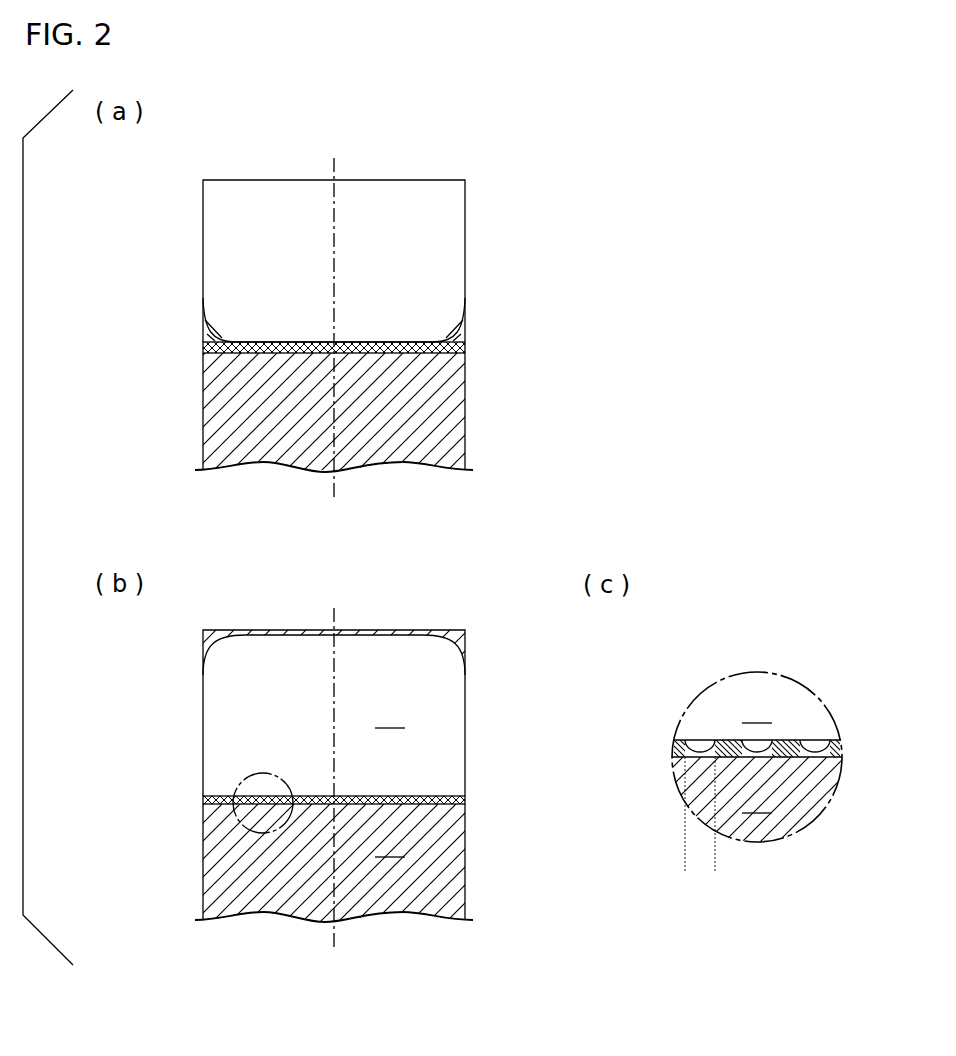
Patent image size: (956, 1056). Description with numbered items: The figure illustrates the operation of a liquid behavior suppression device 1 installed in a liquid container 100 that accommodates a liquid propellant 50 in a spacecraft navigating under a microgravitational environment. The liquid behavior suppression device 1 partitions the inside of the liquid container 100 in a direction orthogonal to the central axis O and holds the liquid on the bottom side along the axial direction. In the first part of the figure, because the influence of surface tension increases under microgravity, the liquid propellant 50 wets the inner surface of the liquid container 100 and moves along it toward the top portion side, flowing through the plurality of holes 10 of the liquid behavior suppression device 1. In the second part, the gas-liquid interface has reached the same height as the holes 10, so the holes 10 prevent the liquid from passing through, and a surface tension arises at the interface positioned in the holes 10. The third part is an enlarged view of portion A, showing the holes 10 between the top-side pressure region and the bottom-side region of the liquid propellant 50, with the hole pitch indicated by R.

The liquid container 100 is at (470, 214).
The liquid behavior suppression device 1 is at (470, 345).
The liquid propellant 50 is at (440, 413).
The hole 10 is at (763, 745).
The central axis O is at (336, 171).
The portion A is at (236, 783).
The recess pitch R is at (715, 863).